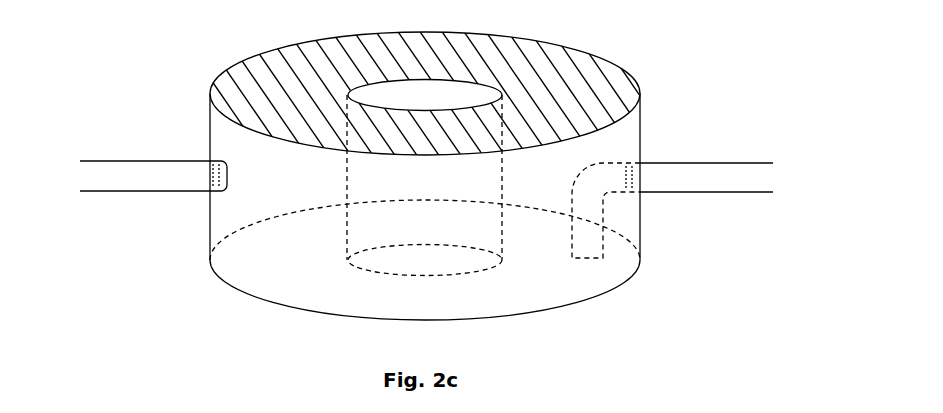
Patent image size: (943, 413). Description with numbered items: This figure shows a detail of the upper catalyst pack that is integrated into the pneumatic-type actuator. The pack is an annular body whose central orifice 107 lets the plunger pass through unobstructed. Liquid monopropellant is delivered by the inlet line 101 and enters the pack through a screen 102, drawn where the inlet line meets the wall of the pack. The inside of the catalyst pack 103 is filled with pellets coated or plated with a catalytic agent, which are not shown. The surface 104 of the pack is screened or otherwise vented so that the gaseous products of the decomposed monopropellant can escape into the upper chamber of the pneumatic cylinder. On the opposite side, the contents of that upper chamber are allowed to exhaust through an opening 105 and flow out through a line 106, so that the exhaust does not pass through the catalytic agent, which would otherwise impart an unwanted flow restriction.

The inlet line 101 is at (128, 193).
The screen 102 is at (229, 173).
The inside of the catalyst pack 103 is at (237, 217).
The surface 104 is at (275, 270).
The opening 105 is at (588, 263).
The line 106 is at (689, 196).
The orifice 107 is at (408, 264).